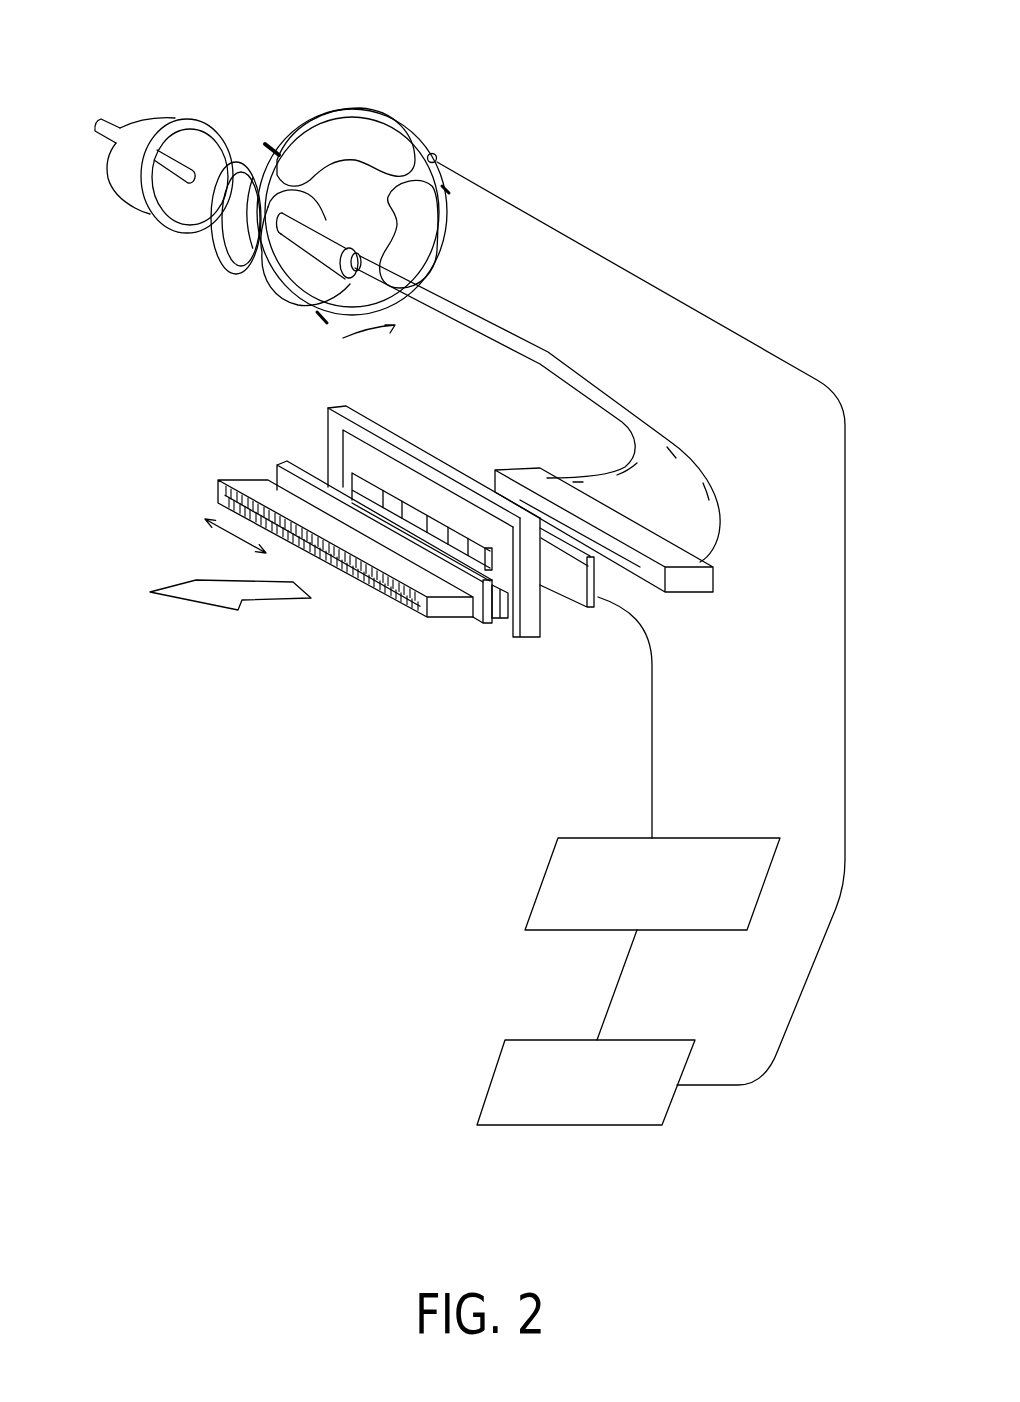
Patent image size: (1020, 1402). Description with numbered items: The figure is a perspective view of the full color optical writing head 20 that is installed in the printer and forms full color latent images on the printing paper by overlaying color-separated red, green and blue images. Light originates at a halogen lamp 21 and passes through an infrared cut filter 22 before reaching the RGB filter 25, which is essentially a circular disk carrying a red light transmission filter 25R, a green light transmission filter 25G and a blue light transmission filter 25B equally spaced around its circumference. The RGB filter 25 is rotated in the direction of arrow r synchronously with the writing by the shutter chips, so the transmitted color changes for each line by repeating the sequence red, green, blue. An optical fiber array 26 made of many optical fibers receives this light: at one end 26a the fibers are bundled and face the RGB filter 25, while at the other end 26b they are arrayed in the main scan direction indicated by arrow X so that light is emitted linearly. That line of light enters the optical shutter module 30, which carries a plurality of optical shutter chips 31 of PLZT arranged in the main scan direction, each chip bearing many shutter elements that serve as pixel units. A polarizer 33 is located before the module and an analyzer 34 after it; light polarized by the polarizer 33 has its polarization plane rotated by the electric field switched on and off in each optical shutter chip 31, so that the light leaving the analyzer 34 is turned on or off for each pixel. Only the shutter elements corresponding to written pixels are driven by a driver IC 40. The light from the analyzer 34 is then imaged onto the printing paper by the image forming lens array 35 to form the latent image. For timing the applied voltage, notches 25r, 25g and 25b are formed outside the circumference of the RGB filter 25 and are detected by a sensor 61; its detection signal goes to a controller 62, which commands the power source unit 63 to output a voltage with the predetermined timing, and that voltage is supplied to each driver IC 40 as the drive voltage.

The full color optical writing head 20 is at (712, 110).
The halogen lamp 21 is at (172, 160).
The infrared cut filter 22 is at (223, 244).
The RGB filter 25 is at (380, 113).
The red light transmission filter 25R is at (350, 132).
The green light transmission filter 25G is at (425, 241).
The blue light transmission filter 25B is at (302, 284).
The notch 25b is at (272, 144).
The notch 25g is at (325, 313).
The notch 25r is at (447, 188).
The optical fiber array 26 is at (545, 369).
The one end of optical fiber array 26a is at (284, 244).
The other end of optical fiber array 26b is at (520, 478).
The optical shutter module 30 is at (392, 438).
The optical shutter chip 31 is at (327, 473).
The polarizer 33 is at (574, 600).
The analyzer 34 is at (480, 623).
The image forming lens array 35 is at (250, 486).
The driver IC 40 is at (417, 494).
The sensor 61 is at (437, 157).
The controller 62 is at (538, 1039).
The power source unit 63 is at (598, 837).